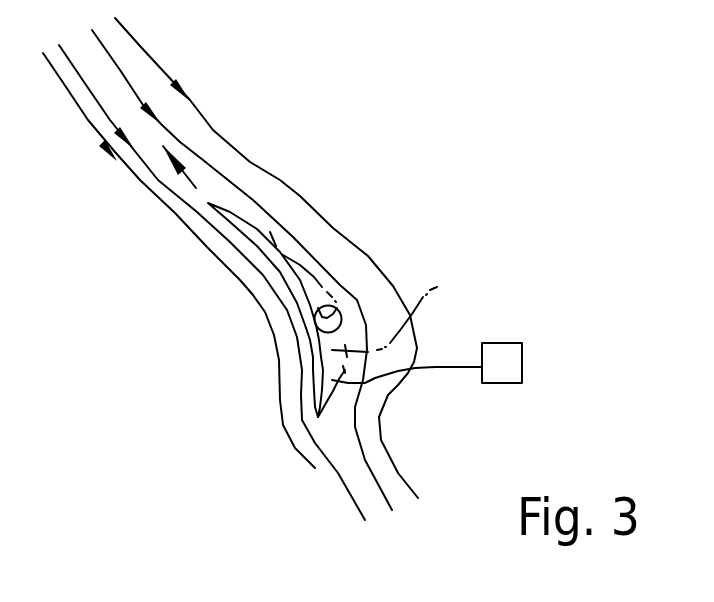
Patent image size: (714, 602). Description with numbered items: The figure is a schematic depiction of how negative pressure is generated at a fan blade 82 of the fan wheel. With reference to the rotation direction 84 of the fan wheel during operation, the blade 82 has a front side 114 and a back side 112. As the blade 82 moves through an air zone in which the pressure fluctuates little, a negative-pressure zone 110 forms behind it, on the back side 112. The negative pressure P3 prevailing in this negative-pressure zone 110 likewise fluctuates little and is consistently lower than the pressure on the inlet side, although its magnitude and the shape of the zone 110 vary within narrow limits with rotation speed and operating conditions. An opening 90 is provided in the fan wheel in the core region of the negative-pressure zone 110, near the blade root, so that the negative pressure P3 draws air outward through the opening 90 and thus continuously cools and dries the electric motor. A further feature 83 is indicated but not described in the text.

The fan blade 82 is at (241, 220).
The flap edge portion 83 is at (283, 254).
The rotation direction 84 is at (194, 178).
The opening 90 is at (338, 310).
The negative-pressure zone 110 is at (448, 284).
The back side 112 is at (287, 258).
The front side 114 is at (253, 295).
The negative pressure P3 is at (427, 363).